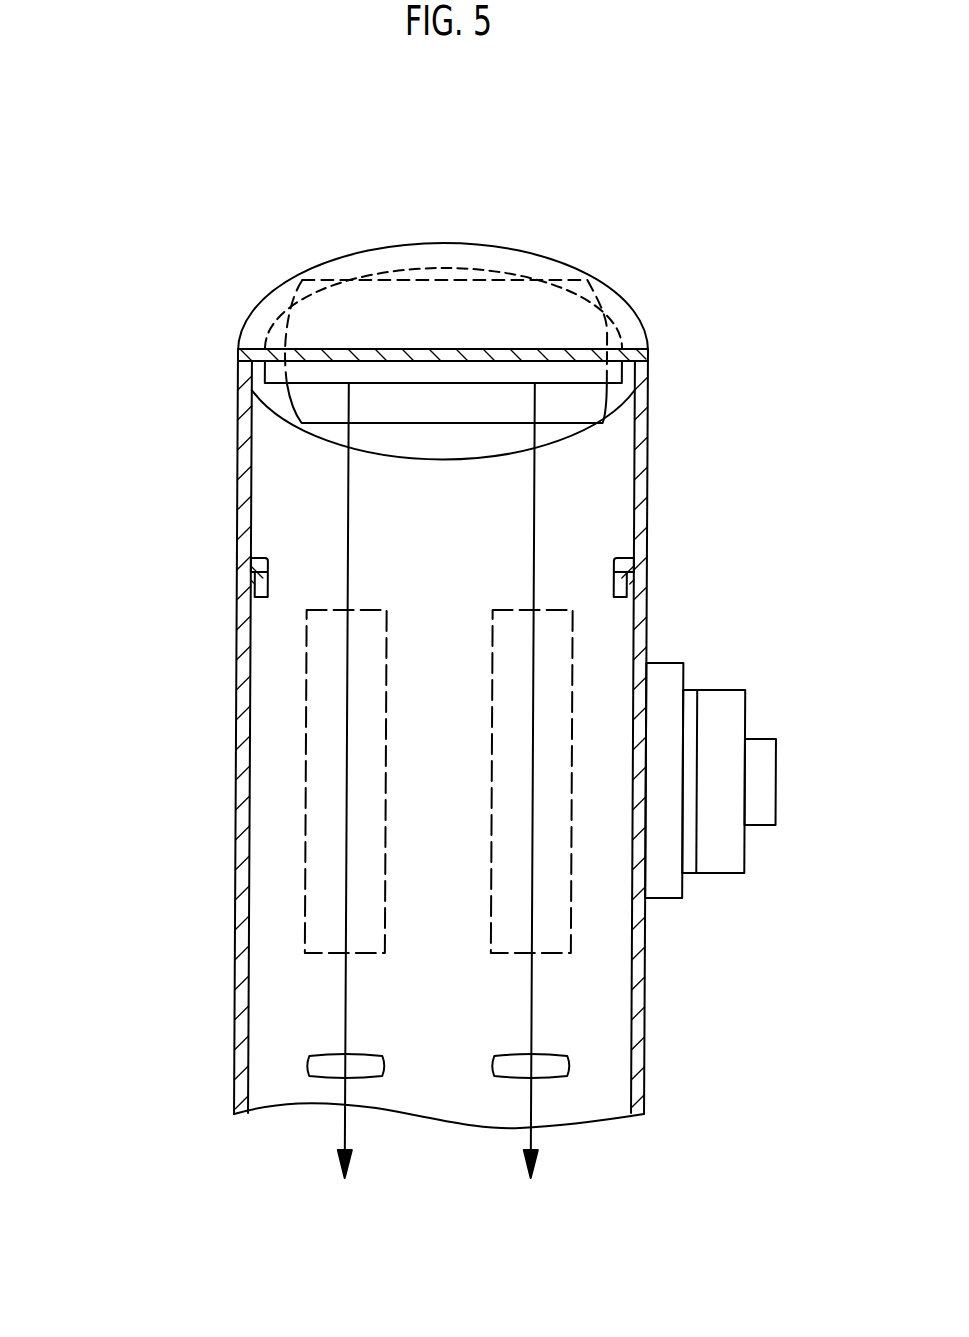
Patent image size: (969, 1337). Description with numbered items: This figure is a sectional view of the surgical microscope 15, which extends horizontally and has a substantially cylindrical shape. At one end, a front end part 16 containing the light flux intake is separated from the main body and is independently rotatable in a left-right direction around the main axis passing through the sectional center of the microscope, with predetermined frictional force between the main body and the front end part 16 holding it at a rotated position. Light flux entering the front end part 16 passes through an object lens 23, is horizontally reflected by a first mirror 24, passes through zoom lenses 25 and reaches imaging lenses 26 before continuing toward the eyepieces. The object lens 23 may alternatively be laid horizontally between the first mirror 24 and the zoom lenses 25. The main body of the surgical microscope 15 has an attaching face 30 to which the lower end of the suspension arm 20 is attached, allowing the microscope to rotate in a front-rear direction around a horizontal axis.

The surgical microscope 15 is at (239, 713).
The front end part 16 is at (238, 463).
The suspension arm 20 is at (748, 850).
The object lens 23 is at (447, 407).
The first mirror 24 is at (415, 270).
The zoom lenses 25 is at (393, 627).
The imaging lenses 26 is at (355, 1053).
The attaching face 30 is at (700, 735).